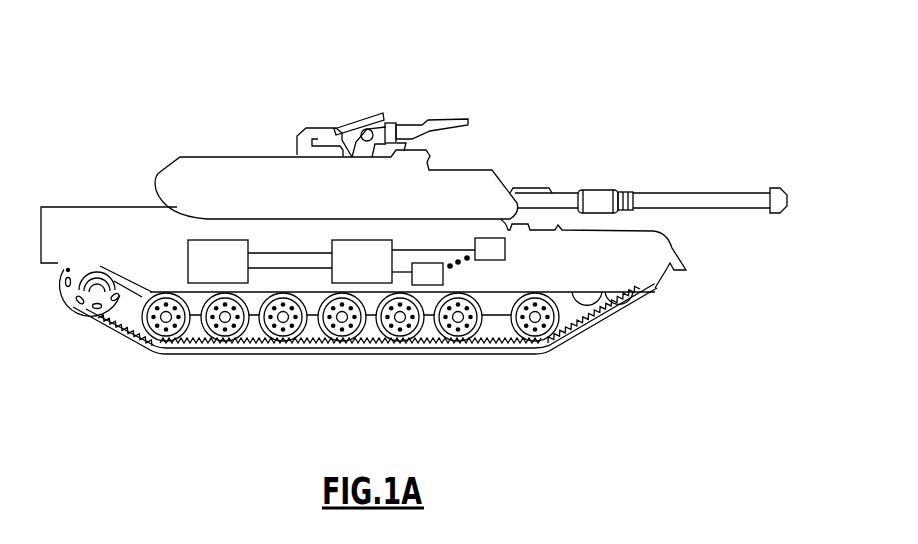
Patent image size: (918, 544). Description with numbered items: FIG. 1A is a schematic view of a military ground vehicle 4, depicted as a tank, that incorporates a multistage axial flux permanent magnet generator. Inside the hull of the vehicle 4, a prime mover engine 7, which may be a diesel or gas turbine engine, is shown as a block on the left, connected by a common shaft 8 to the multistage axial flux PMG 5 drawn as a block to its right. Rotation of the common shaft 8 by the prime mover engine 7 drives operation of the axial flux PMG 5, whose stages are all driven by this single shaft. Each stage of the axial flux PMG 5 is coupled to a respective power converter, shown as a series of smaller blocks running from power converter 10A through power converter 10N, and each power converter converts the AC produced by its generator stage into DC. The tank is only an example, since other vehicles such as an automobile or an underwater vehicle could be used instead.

The military ground vehicle 4 is at (574, 106).
The multistage axial flux PMG 5 is at (354, 276).
The prime mover engine 7 is at (209, 276).
The common shaft 8 is at (300, 262).
The power converter 10A is at (444, 276).
The power converter 10N is at (506, 249).